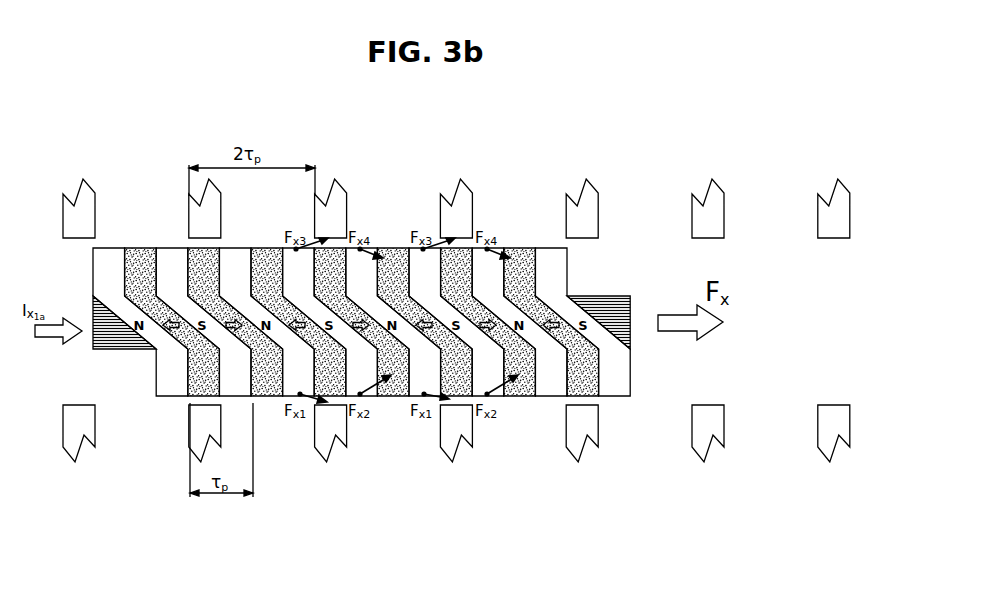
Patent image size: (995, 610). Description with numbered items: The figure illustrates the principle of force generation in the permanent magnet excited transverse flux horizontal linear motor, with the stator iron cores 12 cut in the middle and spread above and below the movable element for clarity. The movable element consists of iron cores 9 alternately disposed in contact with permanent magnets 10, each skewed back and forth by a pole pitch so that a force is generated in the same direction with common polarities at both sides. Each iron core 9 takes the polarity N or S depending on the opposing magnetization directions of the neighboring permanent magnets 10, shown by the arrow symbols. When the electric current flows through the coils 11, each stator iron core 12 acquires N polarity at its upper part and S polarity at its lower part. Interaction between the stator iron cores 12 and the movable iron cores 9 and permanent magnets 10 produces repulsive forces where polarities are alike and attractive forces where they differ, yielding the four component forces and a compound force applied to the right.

The iron cores 9 is at (108, 262).
The permanent magnets 10 is at (577, 378).
The coils 11 is at (593, 304).
The stator iron cores 12 is at (590, 202).